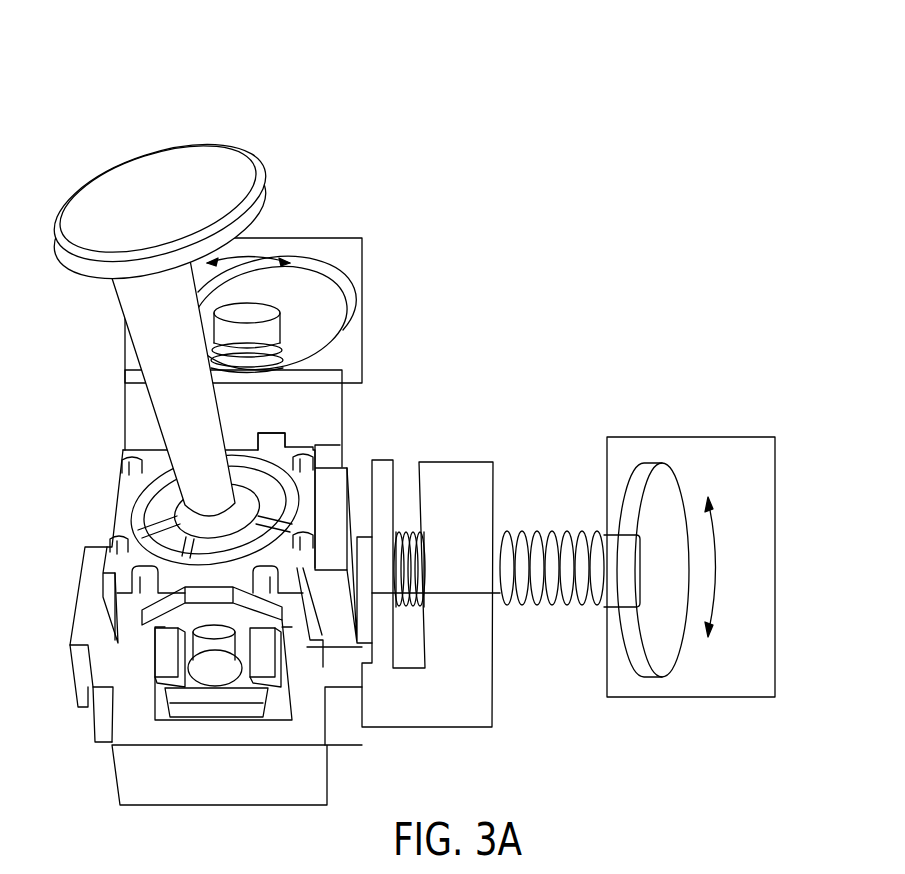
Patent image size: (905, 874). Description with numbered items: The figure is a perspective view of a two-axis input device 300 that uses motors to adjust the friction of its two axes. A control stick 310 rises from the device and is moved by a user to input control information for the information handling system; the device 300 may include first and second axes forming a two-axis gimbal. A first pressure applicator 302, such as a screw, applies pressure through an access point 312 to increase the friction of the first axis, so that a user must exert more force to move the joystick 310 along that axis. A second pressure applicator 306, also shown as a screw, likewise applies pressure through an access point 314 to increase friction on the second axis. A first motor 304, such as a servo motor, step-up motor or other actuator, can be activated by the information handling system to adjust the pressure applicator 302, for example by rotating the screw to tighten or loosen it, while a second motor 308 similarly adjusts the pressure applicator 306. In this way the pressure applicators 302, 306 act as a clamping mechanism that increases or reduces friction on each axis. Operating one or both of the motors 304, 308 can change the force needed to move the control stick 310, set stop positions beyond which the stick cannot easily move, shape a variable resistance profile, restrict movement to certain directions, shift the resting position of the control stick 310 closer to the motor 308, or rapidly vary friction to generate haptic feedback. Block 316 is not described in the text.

The two-axis input device 300 is at (668, 97).
The first pressure applicator 302 is at (535, 538).
The first motor 304 is at (777, 578).
The second pressure applicator 306 is at (308, 288).
The second motor 308 is at (362, 275).
The control stick 310 is at (150, 178).
The access point 312 is at (332, 495).
The access point 314 is at (258, 433).
The block 316 is at (483, 702).